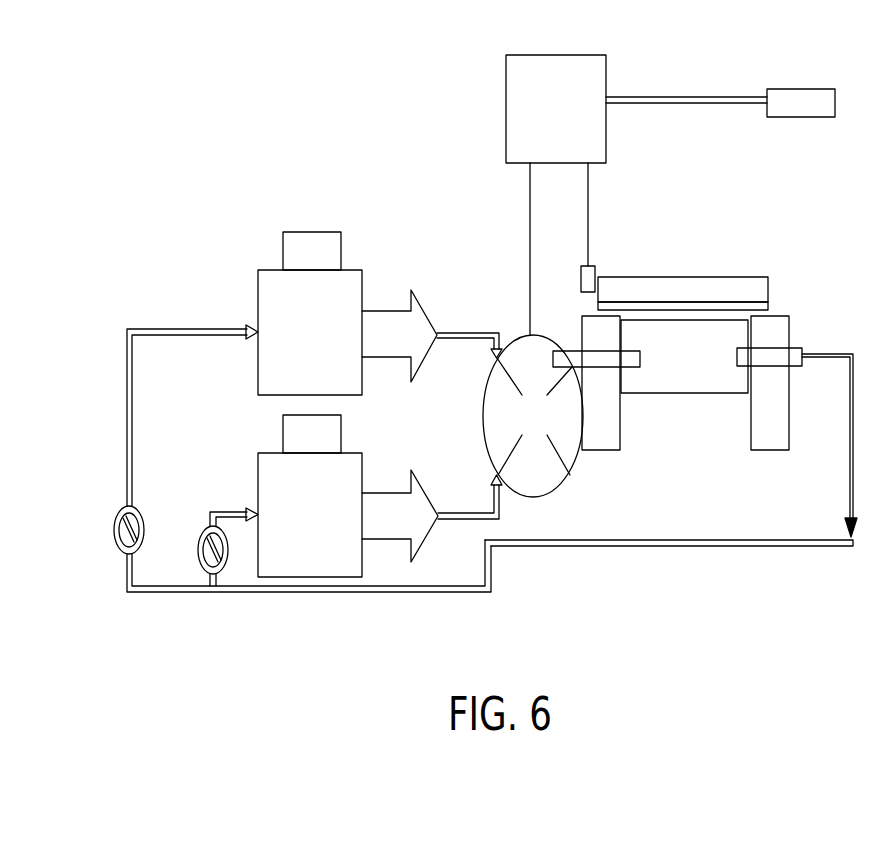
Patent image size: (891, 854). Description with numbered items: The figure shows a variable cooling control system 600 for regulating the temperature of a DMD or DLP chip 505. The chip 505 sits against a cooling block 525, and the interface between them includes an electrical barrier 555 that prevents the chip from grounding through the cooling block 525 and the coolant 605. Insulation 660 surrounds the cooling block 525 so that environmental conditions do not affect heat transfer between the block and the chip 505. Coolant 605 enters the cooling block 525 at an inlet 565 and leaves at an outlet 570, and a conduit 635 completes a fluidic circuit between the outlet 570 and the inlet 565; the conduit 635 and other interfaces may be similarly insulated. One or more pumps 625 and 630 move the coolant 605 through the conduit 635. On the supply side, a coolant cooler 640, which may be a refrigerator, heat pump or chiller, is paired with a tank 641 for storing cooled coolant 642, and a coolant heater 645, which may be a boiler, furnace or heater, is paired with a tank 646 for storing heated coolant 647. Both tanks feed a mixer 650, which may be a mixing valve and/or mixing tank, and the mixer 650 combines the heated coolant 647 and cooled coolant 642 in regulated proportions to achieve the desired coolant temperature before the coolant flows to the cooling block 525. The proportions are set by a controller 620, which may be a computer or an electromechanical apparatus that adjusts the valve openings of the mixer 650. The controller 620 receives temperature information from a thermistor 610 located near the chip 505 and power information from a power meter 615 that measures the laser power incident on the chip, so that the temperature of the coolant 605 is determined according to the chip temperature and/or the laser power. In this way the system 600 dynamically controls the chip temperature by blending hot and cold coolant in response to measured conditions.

The variable cooling control system 600 is at (220, 154).
The coolant 605 is at (182, 593).
The thermistor 610 is at (597, 270).
The power meter 615 is at (810, 117).
The controller 620 is at (605, 130).
The pump 625 is at (218, 575).
The pump 630 is at (117, 543).
The conduit 635 is at (717, 547).
The coolant cooler 640 is at (295, 437).
The tank 641 is at (345, 568).
The cooled coolant 642 is at (400, 543).
The coolant heater 645 is at (310, 248).
The tank 646 is at (273, 277).
The heated coolant 647 is at (388, 308).
The mixer 650 is at (542, 498).
The insulation 660 is at (775, 338).
The DMD chip 505 is at (748, 285).
The electrical barrier 555 is at (765, 308).
The inlet 565 is at (628, 360).
The outlet 570 is at (793, 360).
The cooling block 525 is at (725, 397).